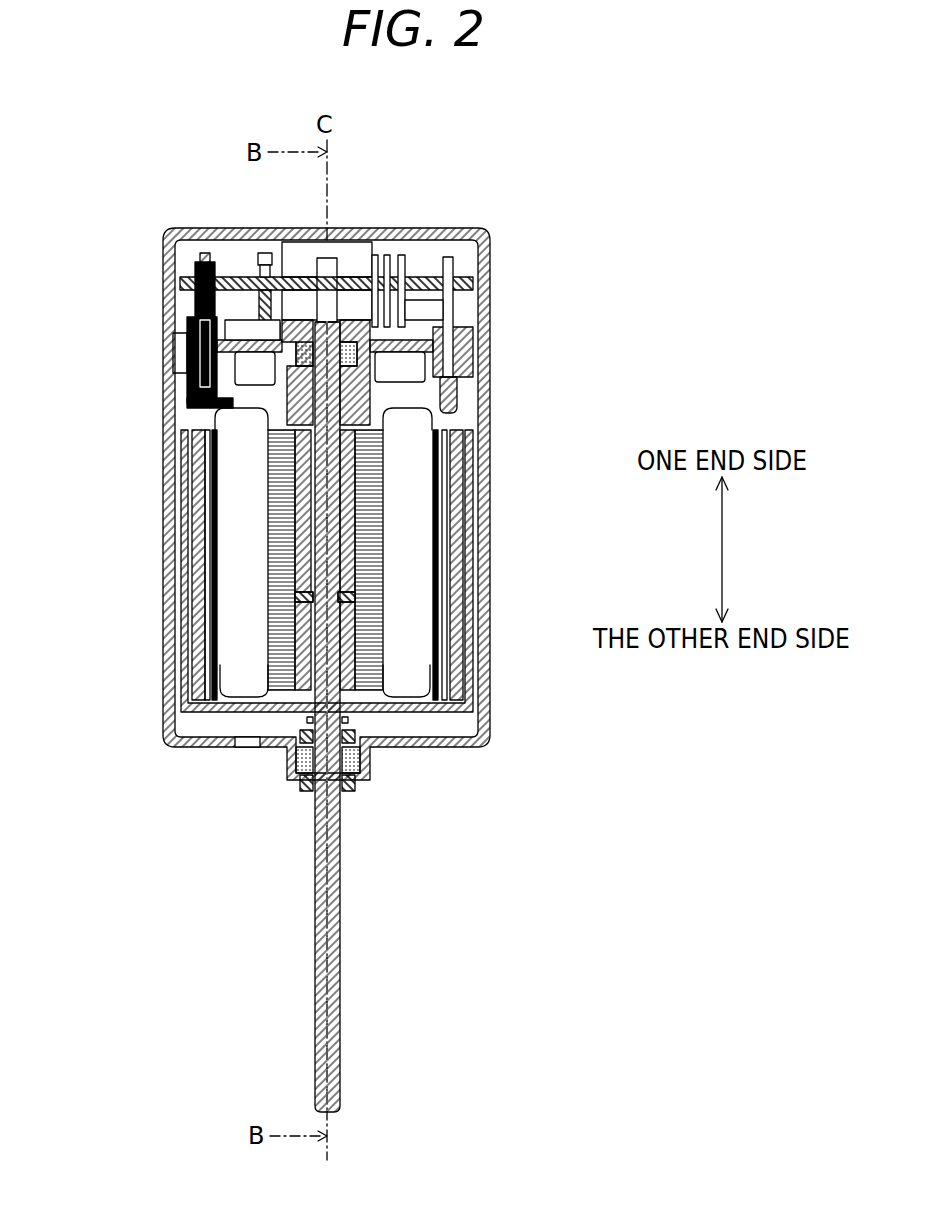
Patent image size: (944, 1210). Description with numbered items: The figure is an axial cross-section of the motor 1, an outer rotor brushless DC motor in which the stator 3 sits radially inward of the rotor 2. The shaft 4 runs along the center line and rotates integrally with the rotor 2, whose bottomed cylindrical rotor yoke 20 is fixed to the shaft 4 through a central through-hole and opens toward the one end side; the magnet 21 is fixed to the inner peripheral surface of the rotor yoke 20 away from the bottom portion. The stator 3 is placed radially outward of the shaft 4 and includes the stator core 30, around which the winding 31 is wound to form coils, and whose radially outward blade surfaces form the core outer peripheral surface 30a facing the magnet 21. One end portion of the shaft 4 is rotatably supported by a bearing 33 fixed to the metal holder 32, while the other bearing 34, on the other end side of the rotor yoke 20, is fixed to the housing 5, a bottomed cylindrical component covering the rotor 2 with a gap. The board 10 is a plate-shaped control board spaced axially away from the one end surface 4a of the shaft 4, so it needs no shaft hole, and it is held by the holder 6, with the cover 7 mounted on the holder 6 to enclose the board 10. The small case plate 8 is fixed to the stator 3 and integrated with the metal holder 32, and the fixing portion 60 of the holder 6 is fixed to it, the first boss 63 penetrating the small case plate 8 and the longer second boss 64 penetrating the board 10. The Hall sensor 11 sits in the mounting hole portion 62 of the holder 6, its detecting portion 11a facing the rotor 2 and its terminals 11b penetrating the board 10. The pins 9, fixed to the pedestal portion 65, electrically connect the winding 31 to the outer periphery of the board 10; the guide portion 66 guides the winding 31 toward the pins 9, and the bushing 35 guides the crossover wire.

The motor 1 is at (138, 216).
The rotor 2 is at (205, 712).
The stator 3 is at (442, 680).
The shaft 4 is at (345, 1042).
The one end surface of the shaft 4a is at (318, 290).
The housing 5 is at (160, 634).
The holder 6 is at (492, 358).
The cover 7 is at (160, 268).
The small case plate 8 is at (195, 312).
The connecting means (pin) 9 is at (200, 260).
The board 10 is at (490, 246).
The Hall sensor 11 is at (462, 418).
The detecting portion 11a is at (465, 405).
The terminals 11b is at (424, 305).
The rotor yoke 20 is at (183, 540).
The magnet 21 is at (195, 567).
The stator core 30 is at (385, 573).
The core outer peripheral surface 30a is at (207, 500).
The winding 31 is at (430, 533).
The metal holder 32 is at (268, 462).
The bearing 33 is at (386, 300).
The bearing 34 is at (290, 762).
The bushing 35 is at (357, 690).
The fixing portion 60 is at (185, 365).
The mounting hole portion 62 is at (472, 380).
The first boss 63 is at (250, 300).
The second boss 64 is at (348, 338).
The pedestal portion 65 is at (180, 340).
The guide portion 66 is at (192, 404).